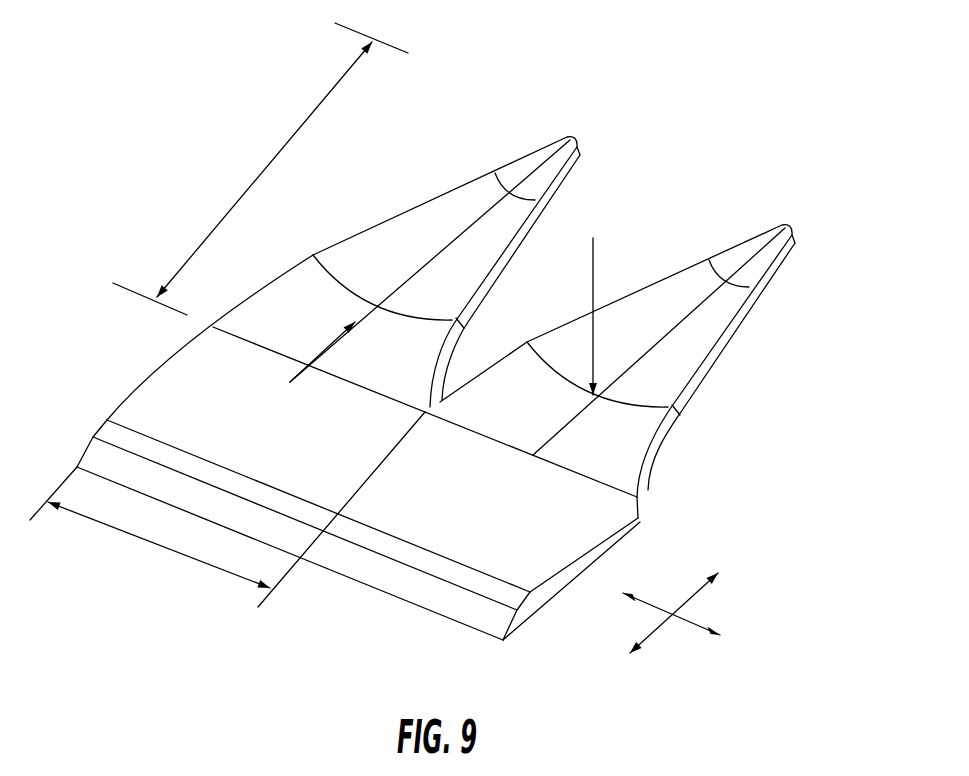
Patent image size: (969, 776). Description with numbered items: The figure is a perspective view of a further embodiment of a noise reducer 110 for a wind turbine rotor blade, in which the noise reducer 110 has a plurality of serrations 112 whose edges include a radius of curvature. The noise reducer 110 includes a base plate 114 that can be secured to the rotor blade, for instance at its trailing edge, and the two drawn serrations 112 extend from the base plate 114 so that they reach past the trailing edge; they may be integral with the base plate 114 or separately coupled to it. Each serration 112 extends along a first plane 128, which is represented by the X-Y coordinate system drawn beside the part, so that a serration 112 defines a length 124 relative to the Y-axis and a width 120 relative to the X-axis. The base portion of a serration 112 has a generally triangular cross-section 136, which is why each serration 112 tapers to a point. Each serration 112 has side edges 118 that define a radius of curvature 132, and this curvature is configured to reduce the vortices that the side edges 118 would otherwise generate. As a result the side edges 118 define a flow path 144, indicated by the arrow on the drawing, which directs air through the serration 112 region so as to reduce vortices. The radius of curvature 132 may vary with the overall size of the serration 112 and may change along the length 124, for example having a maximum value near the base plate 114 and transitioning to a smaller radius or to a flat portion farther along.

The noise reducer 110 is at (123, 115).
The serration 112 is at (727, 357).
The base plate 114 is at (135, 405).
The side edges 118 is at (407, 211).
The width 120 is at (155, 543).
The length 124 is at (238, 197).
The first plane 128 is at (757, 587).
The radius of curvature 132 is at (595, 279).
The triangular cross-section 136 is at (735, 297).
The flow path 144 is at (317, 355).